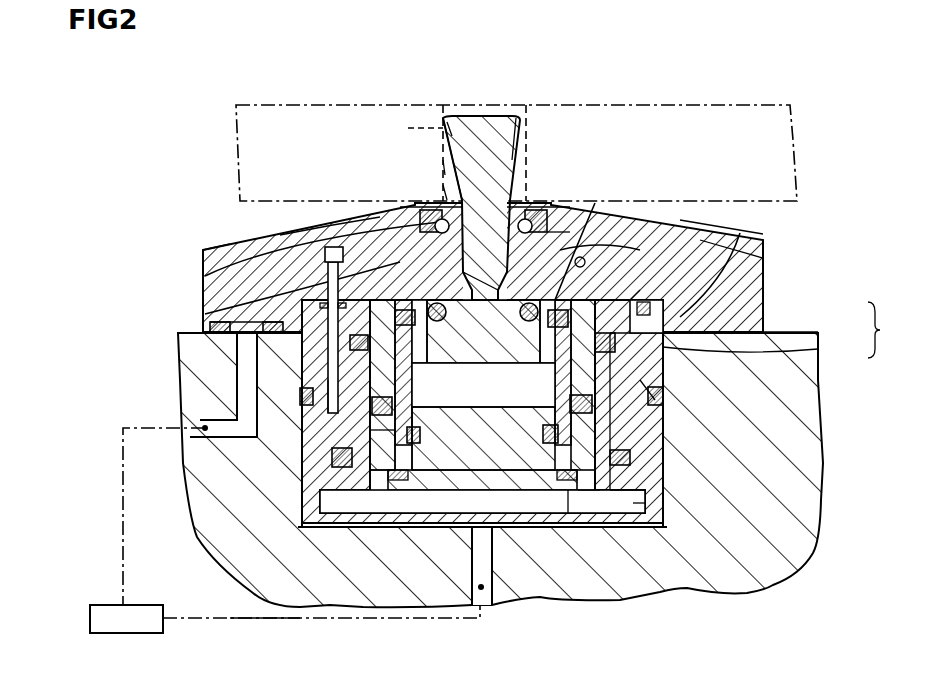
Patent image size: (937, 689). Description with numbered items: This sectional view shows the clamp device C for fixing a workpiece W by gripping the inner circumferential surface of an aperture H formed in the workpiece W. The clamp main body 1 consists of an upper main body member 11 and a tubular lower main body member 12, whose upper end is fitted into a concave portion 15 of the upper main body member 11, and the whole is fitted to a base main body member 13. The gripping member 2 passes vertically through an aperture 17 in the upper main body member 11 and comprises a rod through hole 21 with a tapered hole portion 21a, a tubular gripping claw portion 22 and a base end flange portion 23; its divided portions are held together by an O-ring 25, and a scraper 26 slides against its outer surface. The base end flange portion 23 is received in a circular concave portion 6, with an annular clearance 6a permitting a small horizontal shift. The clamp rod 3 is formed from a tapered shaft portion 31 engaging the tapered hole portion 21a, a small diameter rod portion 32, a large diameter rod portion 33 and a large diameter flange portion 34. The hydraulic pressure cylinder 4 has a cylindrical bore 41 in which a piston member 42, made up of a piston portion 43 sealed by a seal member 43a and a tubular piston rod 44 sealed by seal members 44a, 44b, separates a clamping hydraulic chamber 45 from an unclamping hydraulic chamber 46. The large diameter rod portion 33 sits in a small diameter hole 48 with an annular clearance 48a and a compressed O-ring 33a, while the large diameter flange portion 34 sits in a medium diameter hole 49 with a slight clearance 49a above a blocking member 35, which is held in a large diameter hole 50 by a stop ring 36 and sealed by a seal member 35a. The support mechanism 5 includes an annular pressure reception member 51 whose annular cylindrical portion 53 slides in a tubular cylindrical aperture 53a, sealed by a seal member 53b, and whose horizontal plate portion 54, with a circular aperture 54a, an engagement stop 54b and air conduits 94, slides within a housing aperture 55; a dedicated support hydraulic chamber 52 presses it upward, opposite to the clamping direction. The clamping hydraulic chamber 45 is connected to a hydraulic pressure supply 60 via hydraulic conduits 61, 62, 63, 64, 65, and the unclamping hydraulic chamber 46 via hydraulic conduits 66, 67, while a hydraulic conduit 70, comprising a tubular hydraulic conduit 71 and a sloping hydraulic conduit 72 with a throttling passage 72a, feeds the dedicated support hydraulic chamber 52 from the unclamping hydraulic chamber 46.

The workpiece W is at (289, 104).
The aperture H is at (417, 127).
The chuck C is at (810, 214).
The clamp main body 1 is at (880, 330).
The upper main body member 11 is at (763, 309).
The lower main body member 12 is at (818, 352).
The base main body member 13 is at (800, 446).
The gripping member 2 is at (527, 153).
The clamp rod 3 is at (518, 112).
The tapered shaft portion 31 is at (481, 132).
The small diameter rod portion 32 is at (480, 258).
The large diameter rod portion 33 is at (493, 362).
The O-ring 33a is at (520, 313).
The large diameter flange portion 34 is at (493, 400).
The blocking member 35 is at (493, 453).
The seal member 35a is at (412, 478).
The stop ring 36 is at (568, 490).
The hydraulic pressure cylinder 4 is at (432, 513).
The cylindrical bore 41 is at (633, 503).
The piston member 42 is at (580, 491).
The piston portion 43 is at (345, 478).
The seal member 43a is at (630, 465).
The tubular piston rod 44 is at (372, 450).
The seal member 44a is at (648, 288).
The seal member 44b is at (372, 470).
The clamping hydraulic chamber 45 is at (332, 460).
The unclamping hydraulic chamber 46 is at (518, 504).
The small diameter hole 48 is at (533, 353).
The annular clearance 48a is at (590, 327).
The medium diameter hole 49 is at (556, 388).
The clearance 49a is at (543, 438).
The large diameter hole 50 is at (557, 450).
The support mechanism 5 is at (750, 185).
The annular pressure reception member 51 is at (700, 205).
The dedicated support hydraulic chamber 52 is at (742, 262).
The annular cylindrical portion 53 is at (414, 395).
The tubular cylindrical aperture 53a is at (425, 434).
The seal member 53b is at (328, 392).
The horizontal plate portion 54 is at (328, 254).
The circular aperture 54a is at (457, 302).
The engagement stop 54b is at (207, 268).
The housing aperture 55 is at (597, 250).
The circular concave portion 6 is at (588, 285).
The annular clearance 6a is at (330, 244).
The hydraulic pressure supply 60 is at (133, 605).
The hydraulic conduit 61 is at (130, 500).
The hydraulic conduit 62 is at (200, 418).
The hydraulic conduit 63 is at (204, 303).
The hydraulic conduit 64 is at (178, 333).
The hydraulic conduit 65 is at (237, 372).
The hydraulic conduit 66 is at (230, 612).
The hydraulic conduit 67 is at (493, 570).
The hydraulic conduit 70 is at (739, 408).
The tubular hydraulic conduit 71 is at (660, 462).
The sloping hydraulic conduit 72 is at (662, 414).
The throttling passage 72a is at (655, 397).
The concave portion 15 is at (663, 307).
The aperture 17 is at (565, 245).
The rod through hole 21 is at (447, 196).
The tapered hole portion 21a is at (452, 130).
The gripping claw portion 22 is at (443, 167).
The base end flange portion 23 is at (420, 210).
The O-ring 25 is at (443, 205).
The scraper 26 is at (542, 210).
The air conduits 94 is at (586, 264).